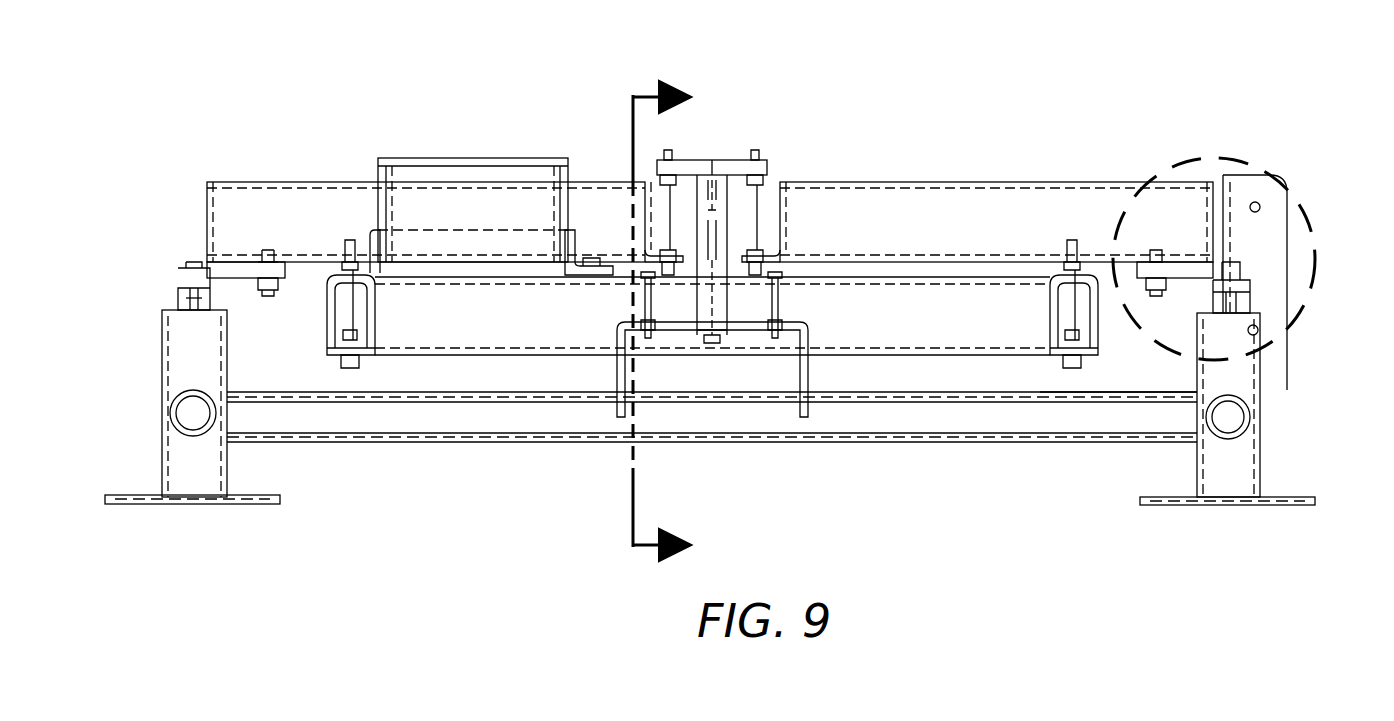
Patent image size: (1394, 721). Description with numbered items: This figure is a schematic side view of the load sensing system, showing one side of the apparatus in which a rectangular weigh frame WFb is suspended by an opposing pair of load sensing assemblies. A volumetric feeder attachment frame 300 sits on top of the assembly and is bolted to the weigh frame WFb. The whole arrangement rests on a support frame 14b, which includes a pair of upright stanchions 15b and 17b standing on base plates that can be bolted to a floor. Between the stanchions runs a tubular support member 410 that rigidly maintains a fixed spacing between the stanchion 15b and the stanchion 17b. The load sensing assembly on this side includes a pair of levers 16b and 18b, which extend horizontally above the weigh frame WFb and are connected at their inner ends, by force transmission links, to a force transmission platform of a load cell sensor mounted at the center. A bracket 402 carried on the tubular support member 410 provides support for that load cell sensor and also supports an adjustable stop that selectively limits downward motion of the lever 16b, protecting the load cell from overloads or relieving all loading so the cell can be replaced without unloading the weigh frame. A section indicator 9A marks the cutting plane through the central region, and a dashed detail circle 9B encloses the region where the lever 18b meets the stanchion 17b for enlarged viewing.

The support frame 14b is at (466, 483).
The stanchion 15b is at (158, 382).
The lever 16b is at (333, 178).
The stanchion 17b is at (1266, 388).
The lever 18b is at (876, 178).
The volumetric feeder attachment frame 300 is at (506, 153).
The bracket 402 is at (812, 374).
The tubular support member 410 is at (1056, 446).
The weigh frame WFb is at (910, 334).
The section line 9A is at (661, 324).
The detail circle 9B is at (1180, 160).